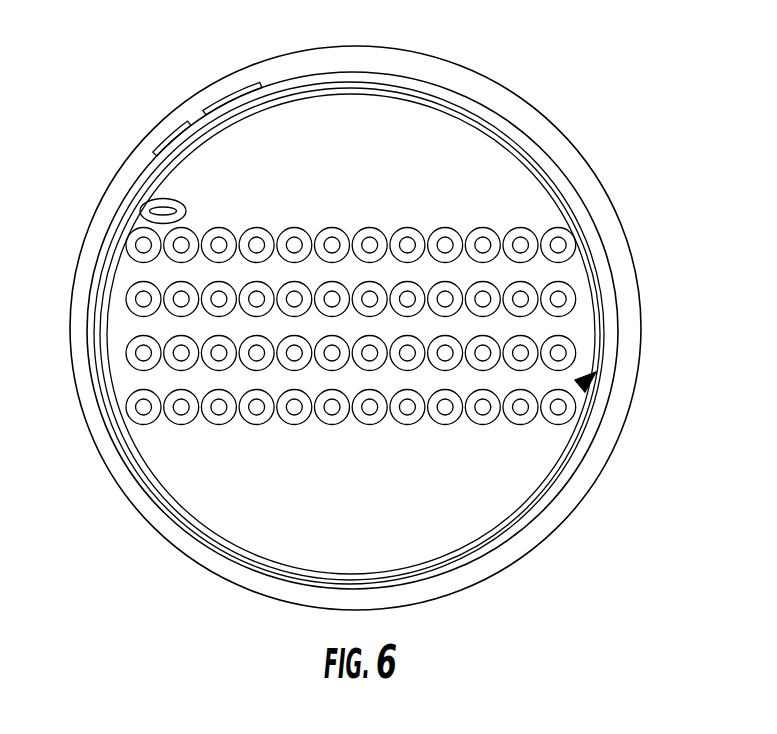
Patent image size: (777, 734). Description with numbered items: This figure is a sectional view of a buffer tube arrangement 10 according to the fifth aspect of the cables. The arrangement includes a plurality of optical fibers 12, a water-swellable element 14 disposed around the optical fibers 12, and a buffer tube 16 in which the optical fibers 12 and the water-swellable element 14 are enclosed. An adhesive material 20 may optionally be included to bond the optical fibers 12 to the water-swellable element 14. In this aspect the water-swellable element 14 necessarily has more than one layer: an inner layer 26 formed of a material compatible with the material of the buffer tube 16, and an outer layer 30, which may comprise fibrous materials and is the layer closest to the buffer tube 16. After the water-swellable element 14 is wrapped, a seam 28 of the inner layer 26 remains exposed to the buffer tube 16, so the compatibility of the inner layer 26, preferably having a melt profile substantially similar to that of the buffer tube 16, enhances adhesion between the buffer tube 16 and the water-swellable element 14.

The buffer tube arrangement 10 is at (192, 62).
The optical fibers 12 is at (145, 423).
The water-swellable element 14 is at (95, 277).
The buffer tube 16 is at (641, 329).
The adhesive material 20 is at (150, 200).
The inner layer 26 is at (190, 522).
The seam 28 is at (262, 100).
The outer layer 30 is at (224, 551).